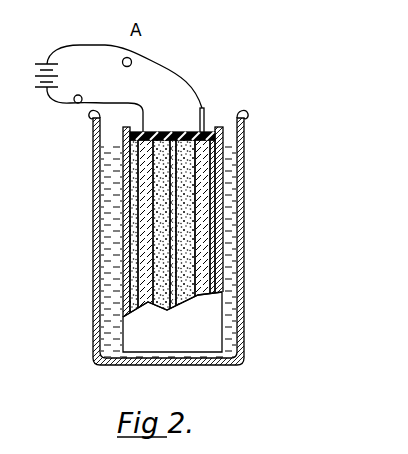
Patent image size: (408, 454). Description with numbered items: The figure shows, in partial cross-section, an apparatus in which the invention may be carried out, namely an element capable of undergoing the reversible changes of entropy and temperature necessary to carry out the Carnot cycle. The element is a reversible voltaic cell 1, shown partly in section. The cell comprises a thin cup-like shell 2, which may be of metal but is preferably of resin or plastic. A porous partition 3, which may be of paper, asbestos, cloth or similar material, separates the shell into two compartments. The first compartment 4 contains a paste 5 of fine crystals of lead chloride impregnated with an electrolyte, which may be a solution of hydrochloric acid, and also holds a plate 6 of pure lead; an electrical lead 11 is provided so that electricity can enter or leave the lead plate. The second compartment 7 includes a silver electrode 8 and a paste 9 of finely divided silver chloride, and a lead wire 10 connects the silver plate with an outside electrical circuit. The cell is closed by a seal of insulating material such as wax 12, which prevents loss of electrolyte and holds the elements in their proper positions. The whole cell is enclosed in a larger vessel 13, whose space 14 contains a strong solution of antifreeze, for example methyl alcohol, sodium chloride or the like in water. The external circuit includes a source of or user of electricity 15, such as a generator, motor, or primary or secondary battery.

The reversible voltaic cell 1 is at (135, 328).
The cup-like shell 2 is at (218, 227).
The porous partition 3 is at (171, 245).
The compartment 4 is at (187, 273).
The paste 5 is at (189, 291).
The plate 6 is at (200, 200).
The second compartment 7 is at (153, 205).
The silver electrode 8 is at (147, 212).
The paste 9 is at (155, 231).
The lead wire 10 is at (144, 118).
The electrical lead 11 is at (205, 118).
The wax 12 is at (158, 132).
The larger vessel 13 is at (241, 162).
The space 14 is at (228, 184).
The source of or user of electricity 15 is at (49, 75).